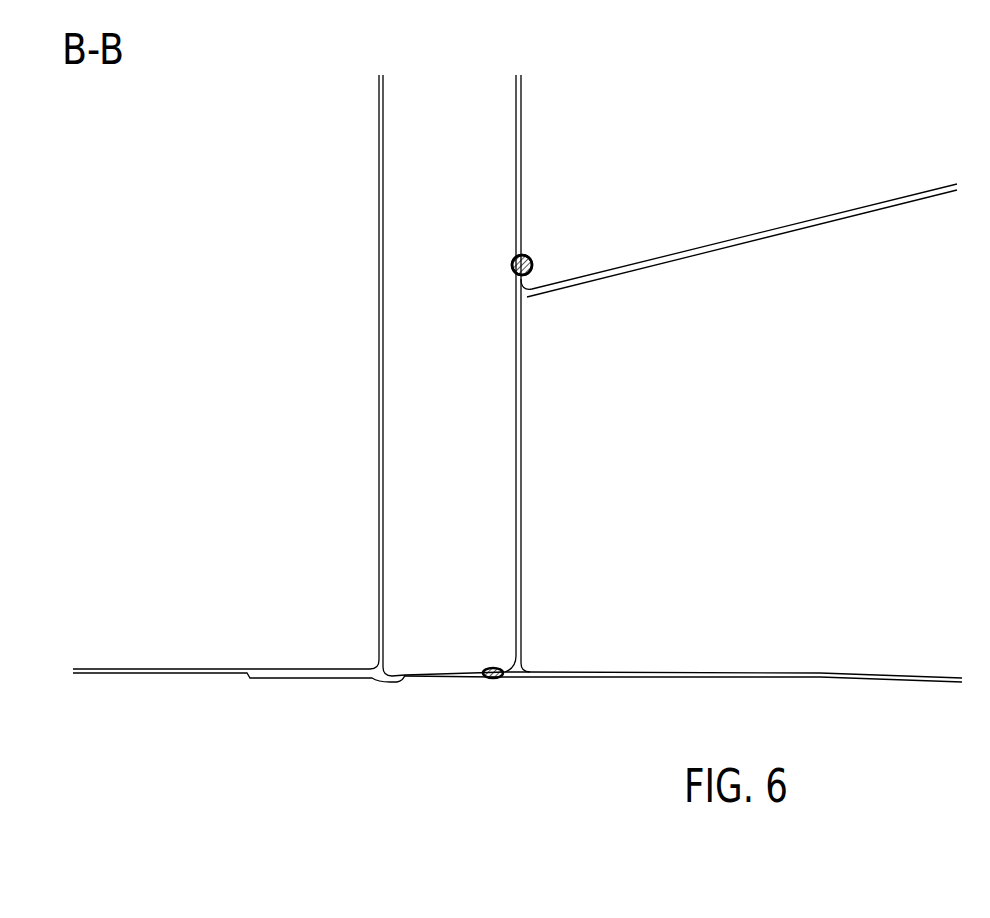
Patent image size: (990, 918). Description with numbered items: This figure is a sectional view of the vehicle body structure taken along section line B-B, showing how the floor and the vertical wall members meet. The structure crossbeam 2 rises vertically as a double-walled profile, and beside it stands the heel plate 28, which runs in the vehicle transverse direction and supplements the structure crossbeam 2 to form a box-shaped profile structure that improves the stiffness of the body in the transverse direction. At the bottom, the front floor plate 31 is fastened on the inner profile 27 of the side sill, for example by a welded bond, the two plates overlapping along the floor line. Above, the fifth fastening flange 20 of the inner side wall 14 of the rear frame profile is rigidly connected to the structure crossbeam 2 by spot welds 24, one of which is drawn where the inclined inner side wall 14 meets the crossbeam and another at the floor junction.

The structure crossbeam 2 is at (525, 432).
The inner side wall 14 is at (767, 232).
The fifth fastening flange 20 is at (527, 256).
The spot welds 24 is at (531, 262).
The inner profile 27 is at (716, 670).
The heel plate 28 is at (378, 313).
The front floor plate 31 is at (147, 672).